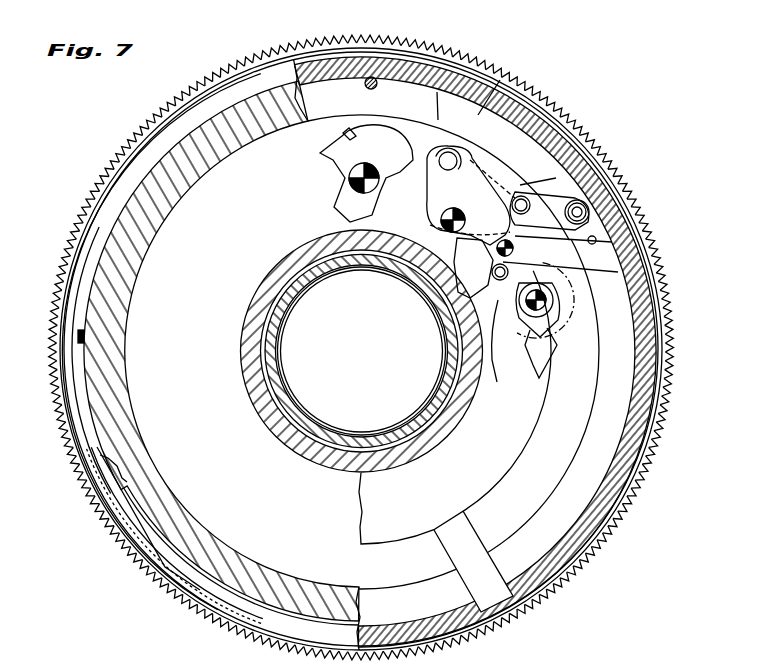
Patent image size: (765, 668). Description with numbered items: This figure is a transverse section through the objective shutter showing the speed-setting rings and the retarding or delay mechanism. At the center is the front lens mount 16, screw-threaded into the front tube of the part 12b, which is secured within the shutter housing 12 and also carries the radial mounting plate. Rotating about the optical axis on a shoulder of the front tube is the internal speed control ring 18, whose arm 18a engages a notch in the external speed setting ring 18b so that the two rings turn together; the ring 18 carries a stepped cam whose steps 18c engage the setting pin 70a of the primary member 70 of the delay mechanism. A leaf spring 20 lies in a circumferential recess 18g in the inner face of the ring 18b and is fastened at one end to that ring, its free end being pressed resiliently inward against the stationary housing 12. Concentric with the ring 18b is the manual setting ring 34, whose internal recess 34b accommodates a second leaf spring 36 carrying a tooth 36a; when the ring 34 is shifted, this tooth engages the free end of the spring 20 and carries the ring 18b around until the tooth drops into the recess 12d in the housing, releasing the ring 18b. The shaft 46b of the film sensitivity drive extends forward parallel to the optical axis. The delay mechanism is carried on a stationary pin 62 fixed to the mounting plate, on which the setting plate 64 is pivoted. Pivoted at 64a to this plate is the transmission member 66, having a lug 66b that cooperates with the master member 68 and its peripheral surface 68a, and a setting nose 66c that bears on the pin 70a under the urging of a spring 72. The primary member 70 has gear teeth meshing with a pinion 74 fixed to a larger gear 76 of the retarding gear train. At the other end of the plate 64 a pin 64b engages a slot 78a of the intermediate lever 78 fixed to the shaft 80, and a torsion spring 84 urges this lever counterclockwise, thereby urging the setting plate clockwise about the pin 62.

The shutter housing 12 is at (123, 397).
The front tube part 12b is at (468, 390).
The recess in shutter housing 12d is at (123, 478).
The front lens mount 16 is at (384, 437).
The internal speed control ring 18 is at (365, 505).
The arm of internal speed control ring 18a is at (502, 596).
The external speed setting ring 18b is at (598, 513).
The cam steps 18c is at (543, 341).
The circumferential recess 18g is at (110, 488).
The leaf spring 20 is at (125, 507).
The manual setting ring 34 is at (204, 106).
The second internal recess 34b is at (105, 232).
The leaf spring 36 is at (83, 262).
The tooth 36a is at (82, 337).
The shaft 46b is at (372, 76).
The stationary pin 62 is at (427, 235).
The delay mechanism setting plate 64 is at (522, 196).
The pivot 64a is at (450, 150).
The lug or pin 64b is at (530, 200).
The transmission member 66 is at (443, 258).
The lug 66b is at (440, 208).
The setting nose 66c is at (463, 298).
The master member 68 is at (383, 138).
The peripheral surface of master member 68a is at (368, 128).
The primary member of delay mechanism 70 is at (612, 242).
The setting pin 70a is at (617, 272).
The spring 72 is at (500, 80).
The pinion 74 is at (553, 305).
The gear 76 is at (567, 332).
The intermediate lever 78 is at (585, 183).
The slot 78a is at (553, 175).
The shaft 80 is at (583, 210).
The torsion spring 84 is at (596, 238).